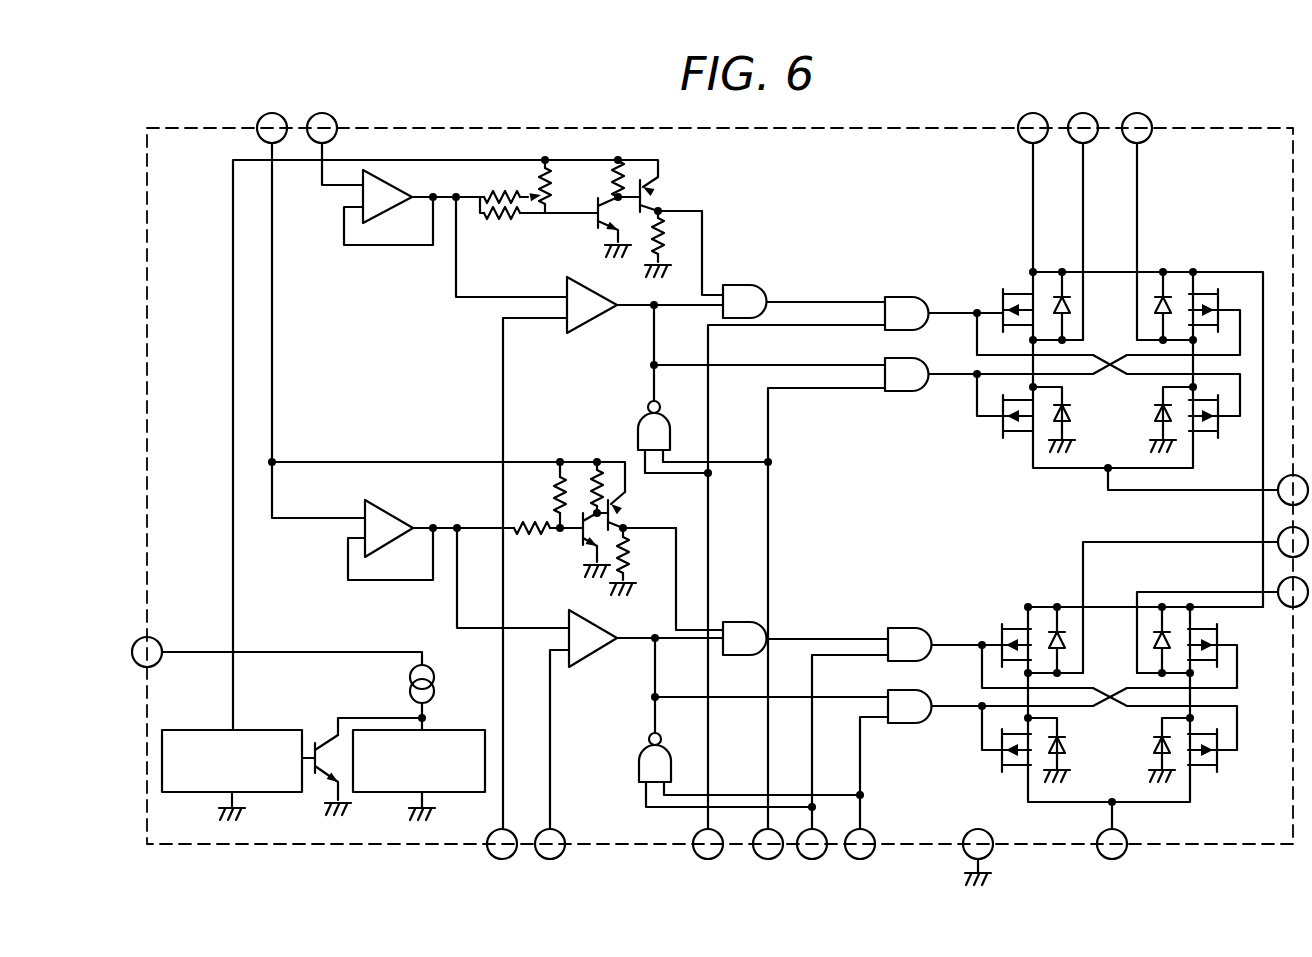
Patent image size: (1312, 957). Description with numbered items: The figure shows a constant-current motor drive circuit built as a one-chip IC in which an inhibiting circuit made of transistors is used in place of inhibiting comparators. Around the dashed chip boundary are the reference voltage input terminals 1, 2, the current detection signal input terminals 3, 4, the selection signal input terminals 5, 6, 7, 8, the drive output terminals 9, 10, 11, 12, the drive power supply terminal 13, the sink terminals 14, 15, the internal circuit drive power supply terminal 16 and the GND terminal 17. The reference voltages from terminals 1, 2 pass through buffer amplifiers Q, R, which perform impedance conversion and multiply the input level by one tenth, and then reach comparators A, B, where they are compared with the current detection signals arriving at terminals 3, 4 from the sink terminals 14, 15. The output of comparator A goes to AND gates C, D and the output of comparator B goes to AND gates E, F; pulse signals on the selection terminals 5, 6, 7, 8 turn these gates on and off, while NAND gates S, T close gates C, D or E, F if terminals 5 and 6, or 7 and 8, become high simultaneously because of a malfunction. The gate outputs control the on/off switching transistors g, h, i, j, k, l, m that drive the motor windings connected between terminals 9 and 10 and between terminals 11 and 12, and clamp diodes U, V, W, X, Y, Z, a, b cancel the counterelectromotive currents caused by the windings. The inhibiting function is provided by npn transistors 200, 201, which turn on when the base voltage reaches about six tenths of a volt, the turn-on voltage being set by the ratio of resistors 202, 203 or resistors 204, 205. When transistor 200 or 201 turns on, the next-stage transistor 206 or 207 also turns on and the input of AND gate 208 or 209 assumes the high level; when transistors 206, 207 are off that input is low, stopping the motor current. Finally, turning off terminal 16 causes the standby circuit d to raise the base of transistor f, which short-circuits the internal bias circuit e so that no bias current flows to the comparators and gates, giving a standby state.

The reference voltage input terminal 1 is at (335, 149).
The reference voltage input terminal 2 is at (311, 315).
The current detection signal input terminal 3 is at (502, 844).
The current detection signal input terminal 4 is at (550, 844).
The selection signal input terminal 5 is at (708, 844).
The selection signal input terminal 6 is at (768, 844).
The selection signal input terminal 7 is at (812, 844).
The selection signal input terminal 8 is at (860, 844).
The drive output terminal 9 is at (1083, 226).
The drive output terminal 10 is at (1137, 226).
The drive output terminal 11 is at (1195, 600).
The drive output terminal 12 is at (1222, 625).
The drive power supply terminal 13 is at (1033, 128).
The sink terminal 14 is at (1293, 490).
The sink terminal 15 is at (1112, 844).
The internal circuit drive power supply terminal 16 is at (147, 652).
The GND terminal 17 is at (978, 857).
The npn transistor 200 is at (598, 223).
The npn transistor 201 is at (582, 495).
The resistor 202 is at (500, 216).
The resistor 203 is at (540, 192).
The resistor 204 is at (525, 536).
The resistor 205 is at (553, 502).
The next-stage transistor 206 is at (651, 195).
The next-stage transistor 207 is at (620, 513).
The AND gate 208 is at (755, 285).
The AND gate 209 is at (738, 622).
The buffer amplifier Q is at (393, 193).
The buffer amplifier R is at (385, 510).
The comparator A is at (585, 323).
The comparator B is at (585, 666).
The AND gate C is at (905, 297).
The AND gate D is at (905, 393).
The AND gate E is at (906, 628).
The AND gate F is at (906, 724).
The NAND gate S is at (638, 432).
The NAND gate T is at (638, 767).
The clamp diode U is at (1071, 305).
The clamp diode V is at (1071, 415).
The clamp diode W is at (1154, 305).
The clamp diode X is at (1154, 418).
The clamp diode Y is at (1066, 636).
The clamp diode Z is at (1066, 745).
The clamp diode a is at (1153, 645).
The clamp diode b is at (1153, 741).
The transistor f is at (1001, 292).
The output transistor g is at (1000, 434).
The output transistor h is at (1222, 296).
The output transistor i is at (1222, 432).
The output transistor j is at (1000, 632).
The output transistor k is at (998, 762).
The output transistor l is at (1222, 628).
The output transistor m is at (1225, 762).
The standby circuit d is at (279, 730).
The internal bias circuit e is at (461, 730).